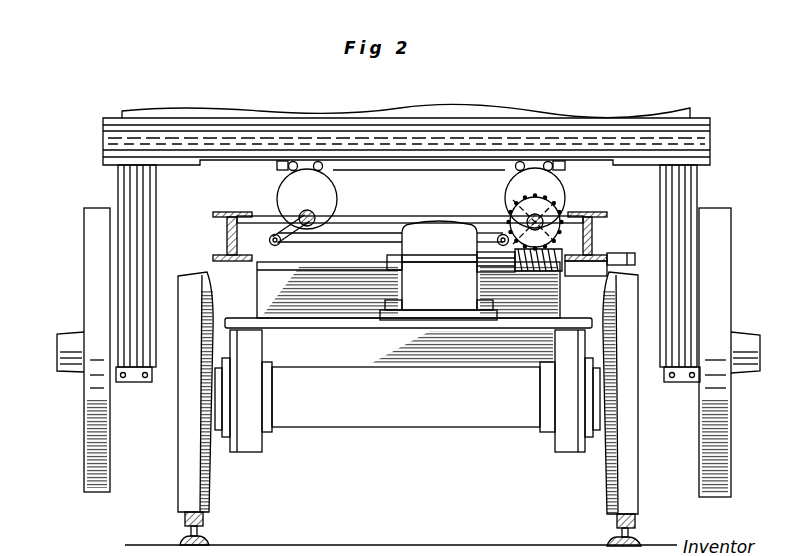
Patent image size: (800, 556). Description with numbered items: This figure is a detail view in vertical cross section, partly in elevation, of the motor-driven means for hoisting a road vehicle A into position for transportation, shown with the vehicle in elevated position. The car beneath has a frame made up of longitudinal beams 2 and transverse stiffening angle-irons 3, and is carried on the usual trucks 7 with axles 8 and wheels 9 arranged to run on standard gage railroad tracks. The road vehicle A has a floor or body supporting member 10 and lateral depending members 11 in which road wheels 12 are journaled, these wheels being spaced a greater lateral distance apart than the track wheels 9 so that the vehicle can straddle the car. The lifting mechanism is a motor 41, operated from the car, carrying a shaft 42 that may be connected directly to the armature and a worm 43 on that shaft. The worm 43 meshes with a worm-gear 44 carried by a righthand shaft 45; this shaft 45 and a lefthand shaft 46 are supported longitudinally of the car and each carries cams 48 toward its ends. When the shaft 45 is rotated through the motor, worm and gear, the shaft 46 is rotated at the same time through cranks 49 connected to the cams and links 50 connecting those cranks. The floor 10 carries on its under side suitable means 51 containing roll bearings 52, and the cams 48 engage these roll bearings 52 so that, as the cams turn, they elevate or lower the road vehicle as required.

The road vehicle A is at (368, 117).
The floor or body supporting member 10 is at (406, 141).
The lateral depending member 11 is at (156, 208).
The road wheel 12 is at (86, 297).
The longitudinal beam 2 is at (226, 238).
The transverse stiffening angle-iron 3 is at (385, 216).
The truck 7 is at (407, 357).
The axle 8 is at (220, 392).
The wheel 9 is at (205, 477).
The motor 41 is at (447, 270).
The shaft 42 is at (630, 243).
The worm 43 is at (548, 274).
The worm-gear 44 is at (560, 204).
The shaft 45 is at (528, 218).
The shaft 46 is at (318, 224).
The cam 48 is at (421, 198).
The crank 49 is at (272, 239).
The link 50 is at (385, 240).
The means containing roll bearings 51 is at (456, 171).
The roll bearing 52 is at (289, 168).